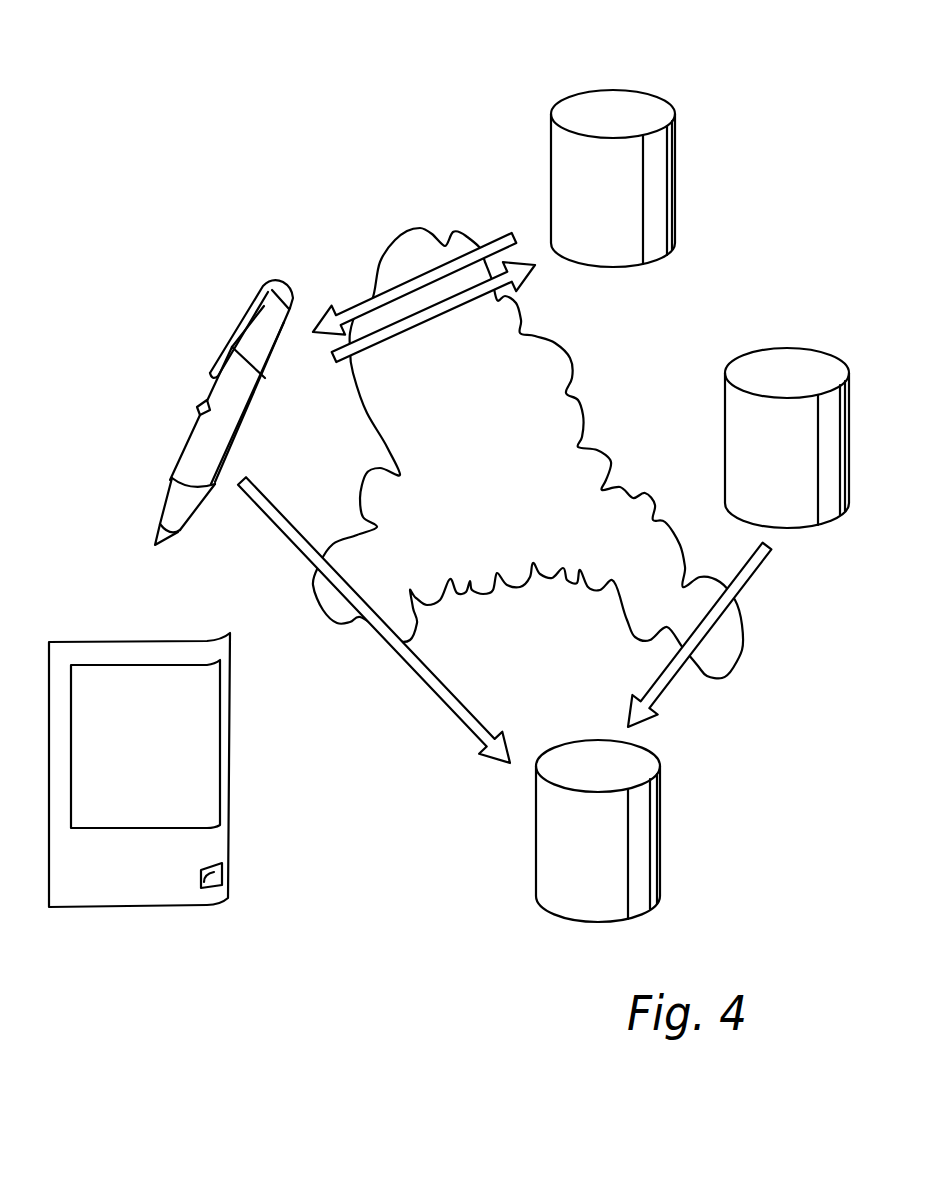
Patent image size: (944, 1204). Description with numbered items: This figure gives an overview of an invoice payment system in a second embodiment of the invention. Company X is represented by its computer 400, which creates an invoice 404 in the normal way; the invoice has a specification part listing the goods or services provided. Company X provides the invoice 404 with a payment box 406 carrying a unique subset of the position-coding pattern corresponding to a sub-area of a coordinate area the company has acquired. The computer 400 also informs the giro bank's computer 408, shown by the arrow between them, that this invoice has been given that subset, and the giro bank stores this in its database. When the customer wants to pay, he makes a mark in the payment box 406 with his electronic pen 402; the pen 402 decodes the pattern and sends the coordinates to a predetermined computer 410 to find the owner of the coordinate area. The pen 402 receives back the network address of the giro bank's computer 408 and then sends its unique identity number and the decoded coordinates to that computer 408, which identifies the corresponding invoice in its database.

The computer of company X 400 is at (782, 373).
The electronic pen 402 is at (192, 440).
The invoice 404 is at (148, 638).
The payment box 406 is at (203, 883).
The giro bank's computer 408 is at (565, 845).
The predetermined computer 410 is at (600, 105).